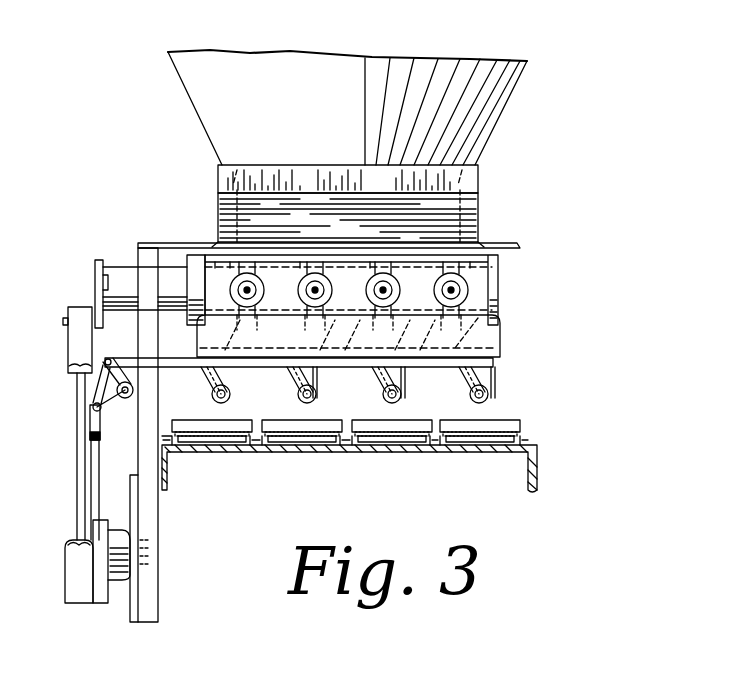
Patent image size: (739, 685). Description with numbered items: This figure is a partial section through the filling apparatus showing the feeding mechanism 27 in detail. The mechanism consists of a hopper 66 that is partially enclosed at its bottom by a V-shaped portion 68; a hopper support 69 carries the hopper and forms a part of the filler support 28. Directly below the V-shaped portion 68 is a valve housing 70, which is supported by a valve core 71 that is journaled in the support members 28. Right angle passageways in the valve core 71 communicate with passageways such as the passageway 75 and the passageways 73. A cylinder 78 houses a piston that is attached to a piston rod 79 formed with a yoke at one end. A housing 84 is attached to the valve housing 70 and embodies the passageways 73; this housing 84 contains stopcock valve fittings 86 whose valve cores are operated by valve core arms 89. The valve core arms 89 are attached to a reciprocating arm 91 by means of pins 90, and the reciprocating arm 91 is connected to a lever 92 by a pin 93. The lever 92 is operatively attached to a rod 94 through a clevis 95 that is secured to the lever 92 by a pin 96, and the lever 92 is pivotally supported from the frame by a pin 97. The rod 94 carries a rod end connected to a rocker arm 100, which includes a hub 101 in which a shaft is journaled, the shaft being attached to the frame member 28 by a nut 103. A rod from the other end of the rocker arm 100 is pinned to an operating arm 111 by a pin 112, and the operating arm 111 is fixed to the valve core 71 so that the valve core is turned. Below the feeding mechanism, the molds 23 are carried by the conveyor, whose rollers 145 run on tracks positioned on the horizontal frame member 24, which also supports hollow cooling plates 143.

The hopper 66 is at (332, 108).
The feeding mechanism 27 is at (492, 184).
The V-shaped portion 68 is at (484, 210).
The hopper support 69 is at (163, 243).
The filler support 28 is at (160, 518).
The valve core 71 is at (128, 270).
The operating arm 111 is at (95, 272).
The pin 112 is at (68, 320).
The valve housing 70 is at (490, 280).
The passageway 75 is at (218, 282).
The cylinder 78 is at (300, 288).
The piston rod 79 is at (322, 290).
The housing 84 is at (504, 340).
The passageways 73 is at (351, 334).
The pin 93 is at (108, 358).
The lever 92 is at (100, 395).
The pin 97 is at (118, 386).
The rod 94 is at (100, 460).
The pin 96 is at (100, 412).
The clevis 95 is at (90, 428).
The rocker arm 100 is at (100, 600).
The hub 101 is at (122, 528).
The nut 103 is at (160, 546).
The pins 90 is at (278, 372).
The valve core arms 89 is at (300, 390).
The stopcock valve fittings 86 is at (405, 380).
The reciprocating arm 91 is at (168, 367).
The molds 23 is at (404, 422).
The rollers 145 is at (256, 446).
The hollow cooling plates 143 is at (470, 452).
The horizontal frame member 24 is at (540, 472).